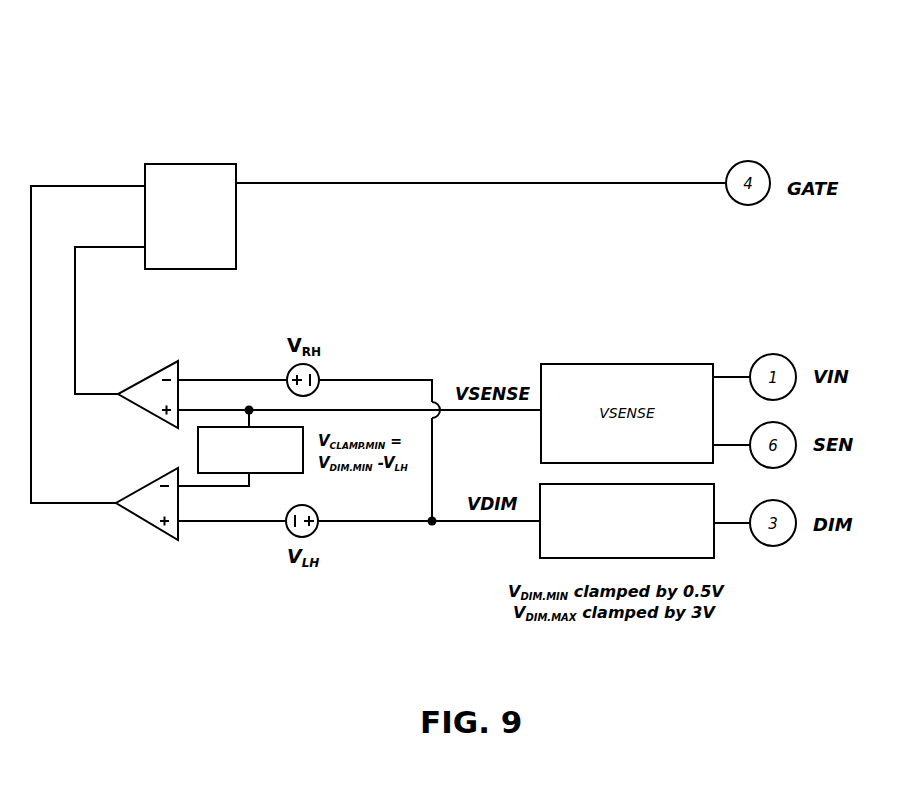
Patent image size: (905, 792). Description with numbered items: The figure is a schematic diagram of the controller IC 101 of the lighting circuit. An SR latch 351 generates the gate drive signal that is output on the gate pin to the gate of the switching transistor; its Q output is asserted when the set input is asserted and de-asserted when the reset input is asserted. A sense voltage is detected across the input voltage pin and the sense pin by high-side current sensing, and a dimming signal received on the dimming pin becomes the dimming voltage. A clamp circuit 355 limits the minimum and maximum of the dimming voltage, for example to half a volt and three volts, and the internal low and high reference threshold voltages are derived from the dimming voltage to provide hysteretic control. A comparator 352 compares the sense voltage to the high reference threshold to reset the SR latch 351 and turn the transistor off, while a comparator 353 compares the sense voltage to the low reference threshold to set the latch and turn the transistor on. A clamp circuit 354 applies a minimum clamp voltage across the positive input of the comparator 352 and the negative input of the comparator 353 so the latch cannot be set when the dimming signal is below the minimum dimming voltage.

The controller IC 101 is at (475, 82).
The SR latch 351 is at (187, 164).
The comparator 352 is at (146, 376).
The comparator 353 is at (139, 520).
The clamp circuit 354 is at (198, 450).
The clamp circuit 355 is at (540, 546).